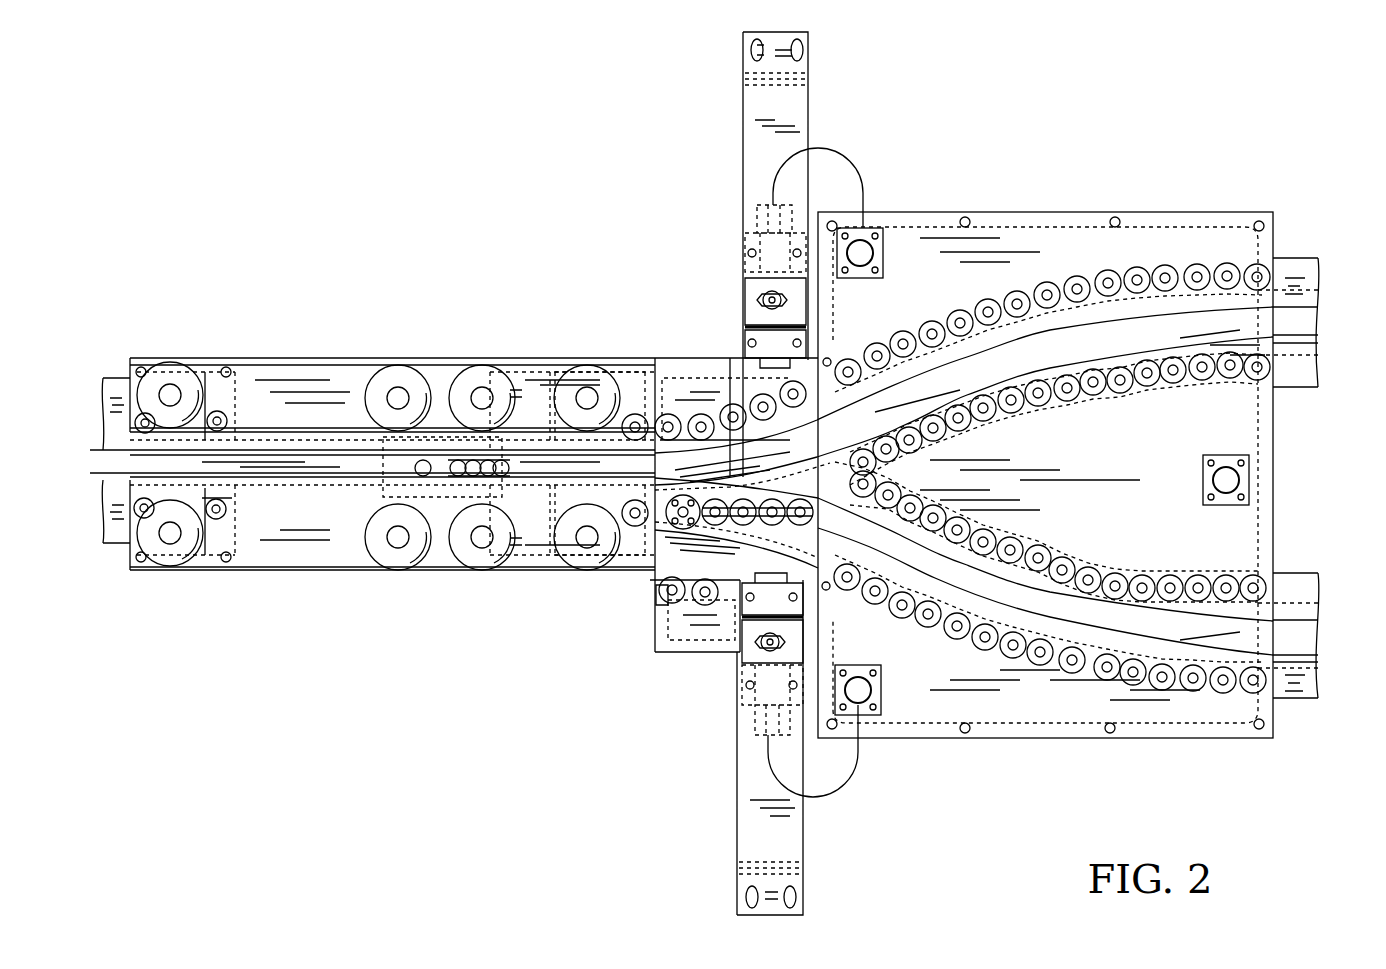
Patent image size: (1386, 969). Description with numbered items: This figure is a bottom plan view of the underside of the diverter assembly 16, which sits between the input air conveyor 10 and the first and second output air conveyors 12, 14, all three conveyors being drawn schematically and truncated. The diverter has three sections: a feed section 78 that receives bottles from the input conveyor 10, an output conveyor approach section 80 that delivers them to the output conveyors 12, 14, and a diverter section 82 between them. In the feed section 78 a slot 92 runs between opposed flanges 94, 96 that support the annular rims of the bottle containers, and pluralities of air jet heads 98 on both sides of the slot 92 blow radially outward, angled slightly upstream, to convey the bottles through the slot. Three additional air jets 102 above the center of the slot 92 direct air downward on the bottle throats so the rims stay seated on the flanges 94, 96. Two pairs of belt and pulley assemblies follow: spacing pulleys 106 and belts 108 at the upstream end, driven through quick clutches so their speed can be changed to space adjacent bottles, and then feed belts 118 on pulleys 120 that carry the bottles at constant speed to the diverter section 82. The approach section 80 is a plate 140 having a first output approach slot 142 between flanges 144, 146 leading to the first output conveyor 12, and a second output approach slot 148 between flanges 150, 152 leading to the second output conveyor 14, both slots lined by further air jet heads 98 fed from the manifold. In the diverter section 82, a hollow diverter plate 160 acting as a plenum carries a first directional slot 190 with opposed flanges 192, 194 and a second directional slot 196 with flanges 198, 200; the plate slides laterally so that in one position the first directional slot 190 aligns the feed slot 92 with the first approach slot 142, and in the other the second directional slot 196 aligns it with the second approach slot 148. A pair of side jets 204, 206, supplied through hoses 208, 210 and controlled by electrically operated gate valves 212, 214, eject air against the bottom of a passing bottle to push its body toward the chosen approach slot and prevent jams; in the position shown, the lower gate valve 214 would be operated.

The input air conveyor 10 is at (122, 570).
The first output air conveyor 12 is at (1305, 258).
The second output air conveyor 14 is at (1298, 700).
The diverter assembly 16 is at (445, 236).
The feed section 78 is at (224, 598).
The output conveyor approach section 80 is at (1268, 762).
The diverter section 82 is at (655, 703).
The slot 92 is at (310, 452).
The flange 94 is at (255, 450).
The flange 96 is at (258, 470).
The air jet heads 98 is at (622, 410).
The air jets 102 is at (442, 462).
The spacing pulleys 106 is at (163, 362).
The belts 108 is at (214, 366).
The feed belts 118 is at (530, 366).
The pulleys 120 is at (485, 368).
The plate 140 is at (1087, 448).
The first output approach slot 142 is at (1195, 330).
The flange 144 is at (1077, 330).
The flange 146 is at (1132, 340).
The second output approach slot 148 is at (1191, 635).
The flange 150 is at (1097, 607).
The flange 152 is at (1140, 625).
The diverter plate 160 is at (670, 592).
The first directional slot 190 is at (658, 438).
The flange 192 is at (698, 440).
The flange 194 is at (732, 477).
The second directional slot 196 is at (655, 605).
The flange 198 is at (667, 606).
The flange 200 is at (740, 548).
The side jet 204 is at (920, 300).
The side jet 206 is at (905, 655).
The hose 208 is at (815, 148).
The hose 210 is at (815, 796).
The gate valve 212 is at (893, 285).
The gate valve 214 is at (897, 650).